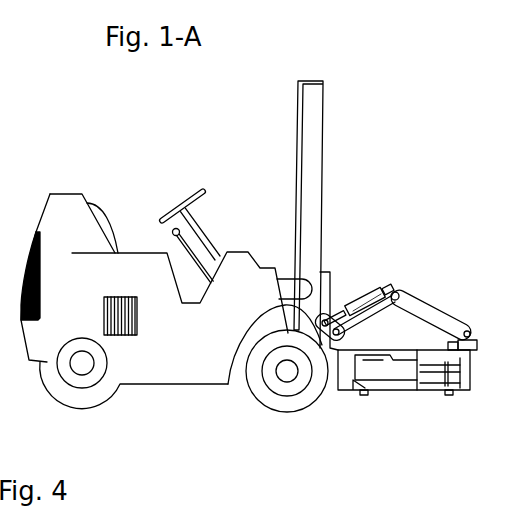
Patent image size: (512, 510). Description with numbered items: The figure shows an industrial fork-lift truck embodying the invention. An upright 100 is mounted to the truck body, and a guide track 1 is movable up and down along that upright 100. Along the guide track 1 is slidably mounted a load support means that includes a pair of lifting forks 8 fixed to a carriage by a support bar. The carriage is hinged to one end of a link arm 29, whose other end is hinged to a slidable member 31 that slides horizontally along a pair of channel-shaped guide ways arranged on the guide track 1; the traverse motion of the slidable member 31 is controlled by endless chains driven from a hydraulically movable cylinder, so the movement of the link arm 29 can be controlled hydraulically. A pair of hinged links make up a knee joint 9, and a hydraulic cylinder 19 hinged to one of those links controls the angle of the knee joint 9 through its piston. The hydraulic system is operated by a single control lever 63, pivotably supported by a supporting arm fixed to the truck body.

The upright 100 is at (316, 135).
The control lever 63 is at (199, 222).
The guide track 1 is at (326, 285).
The hydraulic cylinder 19 is at (358, 297).
The knee joint 9 is at (407, 298).
The slidable member 31 is at (346, 340).
The link arm 29 is at (356, 383).
The lifting forks 8 is at (448, 396).